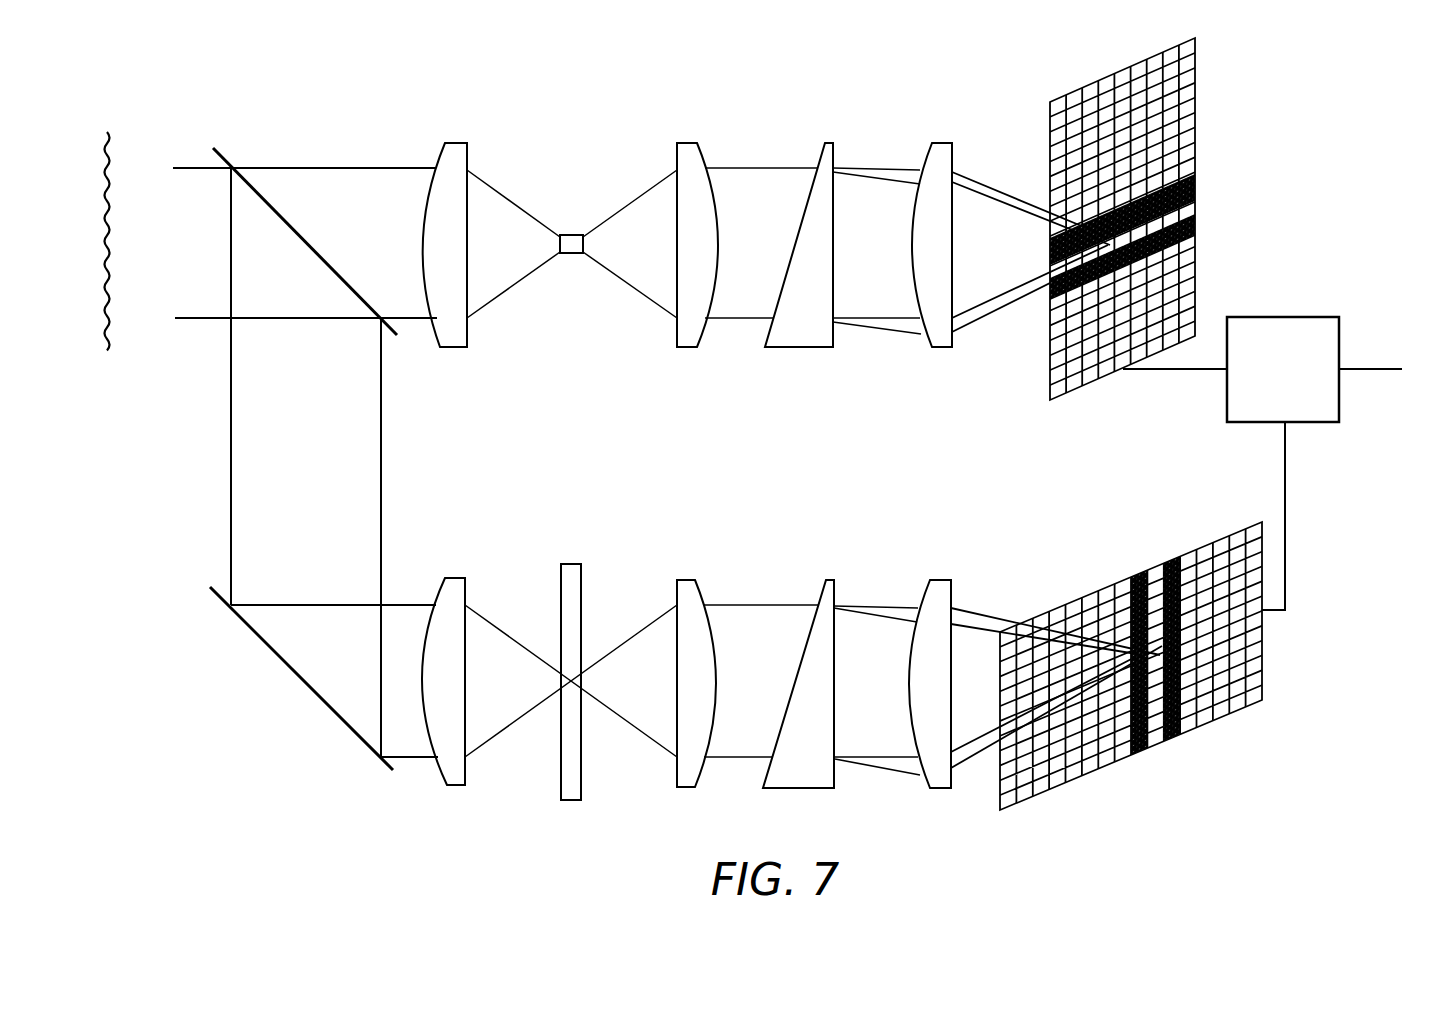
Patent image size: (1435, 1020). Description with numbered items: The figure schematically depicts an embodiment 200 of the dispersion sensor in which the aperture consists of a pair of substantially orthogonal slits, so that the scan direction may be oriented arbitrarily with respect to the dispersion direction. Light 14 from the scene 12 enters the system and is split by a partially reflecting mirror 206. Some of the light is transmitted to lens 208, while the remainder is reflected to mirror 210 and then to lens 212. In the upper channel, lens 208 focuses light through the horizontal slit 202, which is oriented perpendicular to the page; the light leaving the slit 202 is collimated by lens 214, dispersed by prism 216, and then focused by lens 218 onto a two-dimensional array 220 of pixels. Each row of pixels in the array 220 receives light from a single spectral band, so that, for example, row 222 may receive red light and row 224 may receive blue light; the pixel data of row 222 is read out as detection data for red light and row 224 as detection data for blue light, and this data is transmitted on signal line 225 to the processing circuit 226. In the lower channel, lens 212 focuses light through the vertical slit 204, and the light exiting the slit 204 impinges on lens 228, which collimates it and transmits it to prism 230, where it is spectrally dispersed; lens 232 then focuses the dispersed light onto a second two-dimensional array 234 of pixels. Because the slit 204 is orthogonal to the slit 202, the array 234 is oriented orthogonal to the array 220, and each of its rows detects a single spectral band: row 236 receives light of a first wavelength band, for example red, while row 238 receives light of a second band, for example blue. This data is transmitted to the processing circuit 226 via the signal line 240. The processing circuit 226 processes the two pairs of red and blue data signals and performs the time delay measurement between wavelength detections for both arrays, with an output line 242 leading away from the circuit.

The scene 12 is at (108, 121).
The light 14 is at (193, 148).
The dispersion sensor embodiment 200 is at (578, 120).
The horizontal slit 202 is at (573, 232).
The vertical slit 204 is at (571, 562).
The partially reflecting mirror 206 is at (220, 150).
The lens 208 is at (455, 141).
The mirror 210 is at (213, 598).
The lens 212 is at (452, 576).
The lens 214 is at (683, 141).
The prism 216 is at (829, 141).
The lens 218 is at (942, 141).
The two-dimensional array of pixels 220 is at (1195, 44).
The row 222 is at (1195, 187).
The row 224 is at (1195, 227).
The signal line 225 is at (1178, 371).
The processing circuit 226 is at (1283, 316).
The lens 228 is at (685, 578).
The prism 230 is at (830, 578).
The lens 232 is at (940, 578).
The second two-dimensional array of pixels 234 is at (1262, 657).
The row 236 is at (1172, 560).
The row 238 is at (1137, 575).
The signal line 240 is at (1287, 525).
The output line 242 is at (1372, 368).